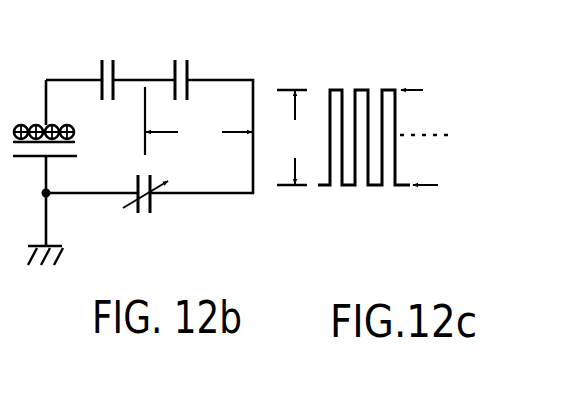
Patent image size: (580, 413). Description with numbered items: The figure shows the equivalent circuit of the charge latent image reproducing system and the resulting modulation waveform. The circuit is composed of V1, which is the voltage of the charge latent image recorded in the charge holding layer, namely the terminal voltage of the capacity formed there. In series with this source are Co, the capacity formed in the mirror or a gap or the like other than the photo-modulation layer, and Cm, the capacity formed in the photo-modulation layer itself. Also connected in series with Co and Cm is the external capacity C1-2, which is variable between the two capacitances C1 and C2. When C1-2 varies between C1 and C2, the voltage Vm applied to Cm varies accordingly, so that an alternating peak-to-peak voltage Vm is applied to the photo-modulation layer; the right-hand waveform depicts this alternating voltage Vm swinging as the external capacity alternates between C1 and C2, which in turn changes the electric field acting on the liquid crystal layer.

In FIG. 12B, the capacity Co is at (107, 53).
In FIG. 12B, the capacity Cm is at (183, 52).
In FIG. 12B, the voltage of the charge latent image V1 is at (43, 122).
In FIG. 12B, the voltage applied to Cm Vm is at (198, 121).
In FIG. 12C, the voltage applied to Cm Vm is at (293, 137).
In FIG. 12B, the external capacity C1-2 is at (138, 213).
In FIG. 12C, the capacitance C1 is at (427, 100).
In FIG. 12C, the capacitance C2 is at (433, 204).